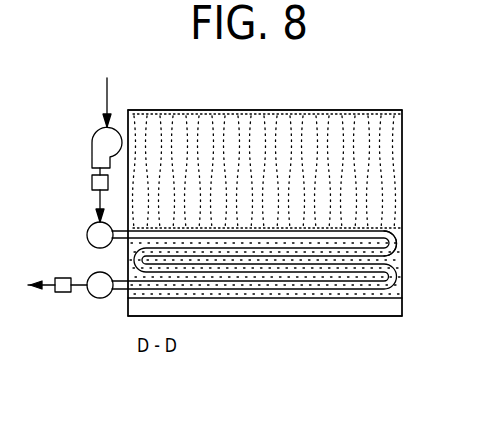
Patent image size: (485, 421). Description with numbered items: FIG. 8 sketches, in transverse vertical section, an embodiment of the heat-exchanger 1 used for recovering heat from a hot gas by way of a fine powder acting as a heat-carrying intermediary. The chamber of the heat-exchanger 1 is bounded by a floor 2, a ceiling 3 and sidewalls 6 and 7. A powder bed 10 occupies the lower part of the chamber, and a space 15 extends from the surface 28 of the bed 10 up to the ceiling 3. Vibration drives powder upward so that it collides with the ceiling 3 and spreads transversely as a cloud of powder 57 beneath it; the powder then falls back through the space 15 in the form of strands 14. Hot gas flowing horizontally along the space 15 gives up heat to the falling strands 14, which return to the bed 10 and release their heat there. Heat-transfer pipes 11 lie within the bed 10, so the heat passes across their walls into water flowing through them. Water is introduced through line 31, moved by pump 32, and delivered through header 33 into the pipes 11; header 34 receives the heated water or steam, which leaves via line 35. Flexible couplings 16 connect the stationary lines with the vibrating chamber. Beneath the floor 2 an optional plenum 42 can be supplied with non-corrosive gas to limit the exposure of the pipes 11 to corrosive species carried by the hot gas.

The heat-exchanger 1 is at (272, 95).
The floor 2 is at (219, 292).
The ceiling 3 is at (140, 110).
The sidewall 6 is at (128, 124).
The sidewall 7 is at (402, 140).
The powder bed 10 is at (130, 247).
The heat-transfer pipes 11 is at (290, 291).
The strands 14 is at (203, 165).
The space 15 is at (250, 160).
The flexible couplings 16 is at (92, 182).
The surface of bed 28 is at (370, 228).
The line 31 is at (107, 91).
The pump 32 is at (93, 127).
The header 33 is at (90, 226).
The header 34 is at (92, 298).
The line 35 is at (58, 292).
The plenum 42 is at (328, 307).
The cloud of powder 57 is at (332, 122).